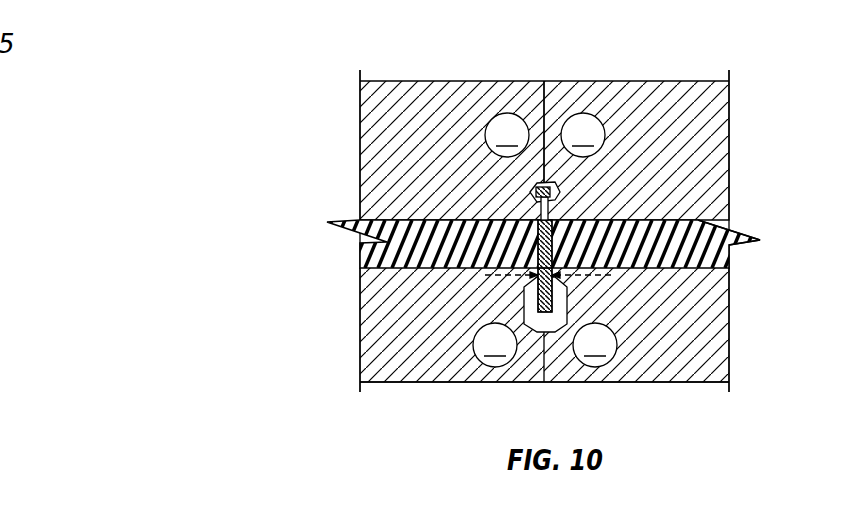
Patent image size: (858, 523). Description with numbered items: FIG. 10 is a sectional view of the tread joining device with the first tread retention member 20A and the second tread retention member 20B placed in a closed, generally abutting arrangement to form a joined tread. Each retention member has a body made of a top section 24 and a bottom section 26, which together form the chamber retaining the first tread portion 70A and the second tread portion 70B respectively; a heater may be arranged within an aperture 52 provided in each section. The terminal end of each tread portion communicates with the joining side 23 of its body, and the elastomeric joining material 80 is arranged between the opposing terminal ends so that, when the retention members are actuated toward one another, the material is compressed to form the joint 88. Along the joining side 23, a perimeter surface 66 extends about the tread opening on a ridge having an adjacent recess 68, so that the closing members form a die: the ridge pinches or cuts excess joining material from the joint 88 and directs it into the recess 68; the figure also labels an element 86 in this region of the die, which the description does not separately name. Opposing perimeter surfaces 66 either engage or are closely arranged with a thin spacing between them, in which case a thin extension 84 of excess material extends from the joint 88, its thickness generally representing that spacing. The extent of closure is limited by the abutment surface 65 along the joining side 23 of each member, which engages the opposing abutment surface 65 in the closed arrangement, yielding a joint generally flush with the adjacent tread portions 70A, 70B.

The first tread retention member 20A is at (376, 404).
The second tread retention member 20B is at (717, 55).
The joining side 23 is at (542, 110).
The top section 24 is at (425, 96).
The bottom section 26 is at (718, 340).
The aperture 52 is at (545, 240).
The abutment surface 65 is at (553, 95).
The perimeter surface 66 is at (553, 210).
The recess 68 is at (560, 190).
The first tread portion 70A is at (360, 260).
The second tread portion 70B is at (718, 255).
The elastomeric joining material 80 is at (541, 210).
The thin extension 84 is at (556, 277).
The pin head 86 is at (536, 190).
The joint 88 is at (537, 245).